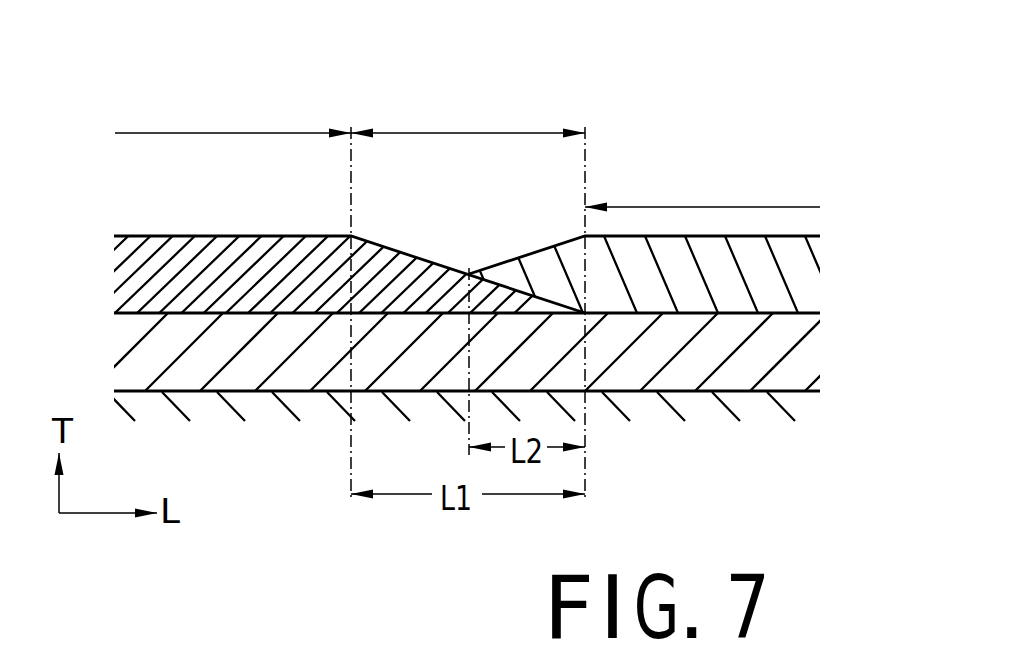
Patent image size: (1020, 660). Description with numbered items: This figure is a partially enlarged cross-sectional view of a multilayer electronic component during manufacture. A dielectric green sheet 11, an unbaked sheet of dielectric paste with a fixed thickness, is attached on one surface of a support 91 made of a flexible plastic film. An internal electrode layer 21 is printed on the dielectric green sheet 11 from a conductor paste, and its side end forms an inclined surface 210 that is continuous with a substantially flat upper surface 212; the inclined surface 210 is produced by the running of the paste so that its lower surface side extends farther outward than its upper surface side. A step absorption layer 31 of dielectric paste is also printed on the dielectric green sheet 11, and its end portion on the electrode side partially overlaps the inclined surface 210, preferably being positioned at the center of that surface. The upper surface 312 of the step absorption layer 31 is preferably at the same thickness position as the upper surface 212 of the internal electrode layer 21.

The internal electrode layer 21 is at (127, 275).
The step absorption layer 31 is at (805, 275).
The dielectric green sheet 11 is at (805, 353).
The support 91 is at (805, 408).
The upper surface 212 is at (226, 133).
The inclined surface 210 is at (466, 133).
The upper surface 312 is at (722, 207).